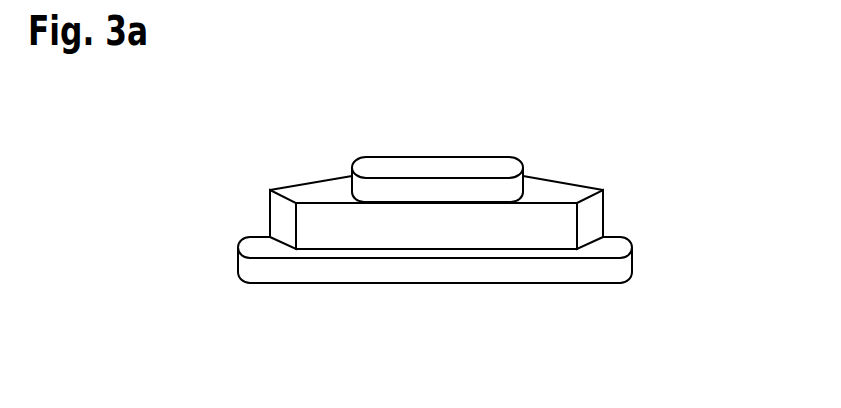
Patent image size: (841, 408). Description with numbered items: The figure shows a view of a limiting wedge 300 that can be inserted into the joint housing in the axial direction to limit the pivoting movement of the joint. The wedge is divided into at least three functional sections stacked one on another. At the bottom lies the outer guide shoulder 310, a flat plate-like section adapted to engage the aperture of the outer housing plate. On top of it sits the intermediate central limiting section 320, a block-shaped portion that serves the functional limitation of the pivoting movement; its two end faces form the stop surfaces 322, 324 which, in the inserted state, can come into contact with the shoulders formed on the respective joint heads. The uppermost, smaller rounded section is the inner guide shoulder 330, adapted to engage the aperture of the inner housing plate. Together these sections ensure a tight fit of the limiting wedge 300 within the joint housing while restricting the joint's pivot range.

The limiting wedge 300 is at (612, 114).
The outer guide shoulder 310 is at (380, 268).
The central limiting section 320 is at (518, 230).
The stop surface 322 is at (282, 215).
The stop surface 324 is at (593, 215).
The inner guide shoulder 330 is at (437, 167).